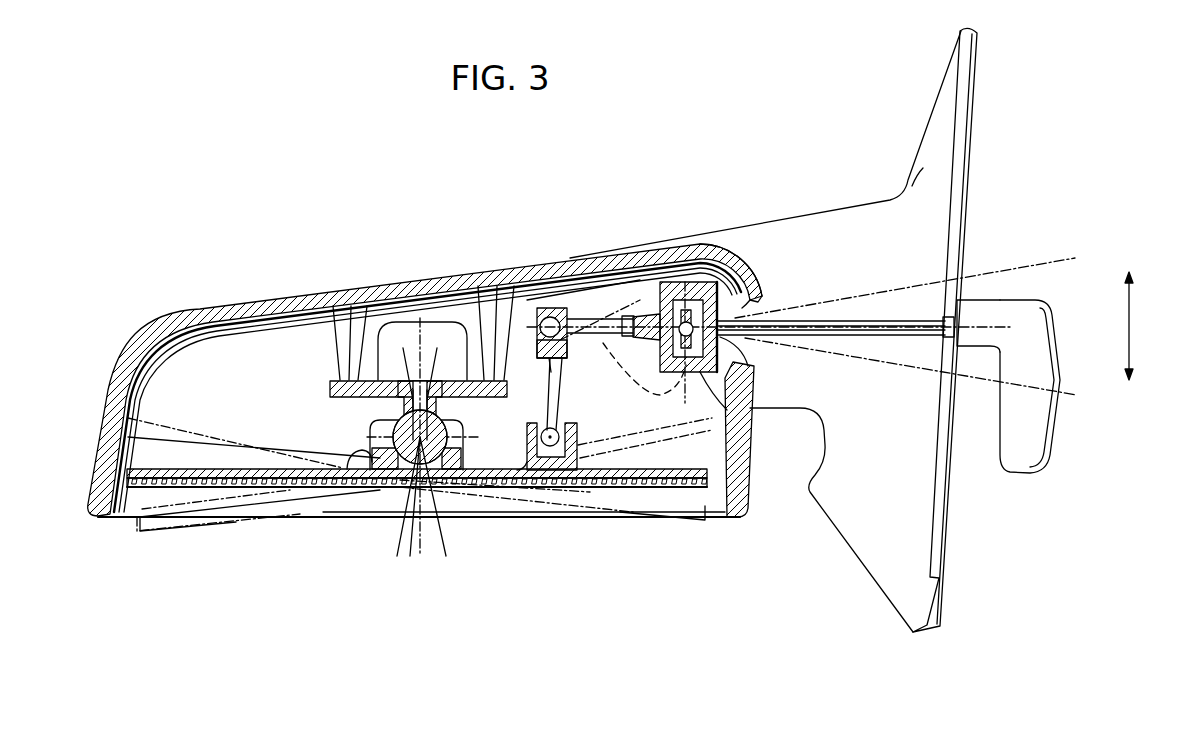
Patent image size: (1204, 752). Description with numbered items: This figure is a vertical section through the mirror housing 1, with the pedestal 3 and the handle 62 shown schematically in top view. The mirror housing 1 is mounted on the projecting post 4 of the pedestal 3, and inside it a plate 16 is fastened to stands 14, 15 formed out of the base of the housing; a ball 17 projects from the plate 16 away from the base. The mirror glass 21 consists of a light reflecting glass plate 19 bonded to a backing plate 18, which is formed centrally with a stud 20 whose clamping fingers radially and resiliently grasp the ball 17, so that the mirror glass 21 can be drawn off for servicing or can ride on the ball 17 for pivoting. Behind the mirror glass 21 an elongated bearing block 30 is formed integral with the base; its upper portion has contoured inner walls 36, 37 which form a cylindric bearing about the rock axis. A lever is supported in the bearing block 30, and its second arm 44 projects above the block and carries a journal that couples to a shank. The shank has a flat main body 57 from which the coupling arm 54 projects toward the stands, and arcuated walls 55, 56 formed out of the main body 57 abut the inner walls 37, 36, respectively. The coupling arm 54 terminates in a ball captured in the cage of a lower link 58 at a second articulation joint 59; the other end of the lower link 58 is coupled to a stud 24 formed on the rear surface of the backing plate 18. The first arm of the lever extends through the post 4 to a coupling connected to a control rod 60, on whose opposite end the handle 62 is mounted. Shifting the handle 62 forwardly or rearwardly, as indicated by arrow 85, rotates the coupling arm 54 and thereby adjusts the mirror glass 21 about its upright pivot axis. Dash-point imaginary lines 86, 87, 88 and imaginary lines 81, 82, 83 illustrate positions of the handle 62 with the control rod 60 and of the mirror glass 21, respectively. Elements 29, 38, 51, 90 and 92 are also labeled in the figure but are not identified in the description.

The mirror housing 1 is at (437, 280).
The pedestal 3 is at (939, 82).
The post 4 is at (805, 217).
The stand 14 is at (345, 350).
The stand 15 is at (516, 322).
The plate 16 is at (328, 385).
The ball 17 is at (447, 477).
The backing plate 18 is at (228, 480).
The light reflecting glass plate 19 is at (286, 480).
The stud 20 is at (352, 468).
The mirror glass 21 is at (372, 518).
The stud 24 is at (518, 470).
The adjusting rod 29 is at (857, 320).
The bearing block 30 is at (719, 356).
The inner wall 36 is at (728, 262).
The inner wall 37 is at (746, 412).
The wall lip 38 is at (766, 297).
The second arm 44 is at (752, 302).
The shaft collar 51 is at (638, 305).
The coupling arm 54 is at (612, 318).
The arcuated wall 55 is at (680, 375).
The arcuated wall 56 is at (690, 286).
The main body 57 is at (655, 311).
The lower link 58 is at (558, 404).
The second articulation joint 59 is at (556, 309).
The control rod 60 is at (910, 320).
The handle 62 is at (995, 318).
The imaginary line 81 is at (1077, 397).
The imaginary line 82 is at (660, 480).
The imaginary line 83 is at (156, 532).
The arrow 85 is at (1133, 362).
The dash-point imaginary line 86 is at (1072, 258).
The dash-point imaginary line 87 is at (600, 506).
The dash-point imaginary line 88 is at (206, 430).
The spring 90 is at (550, 362).
The bearing base 92 is at (560, 354).